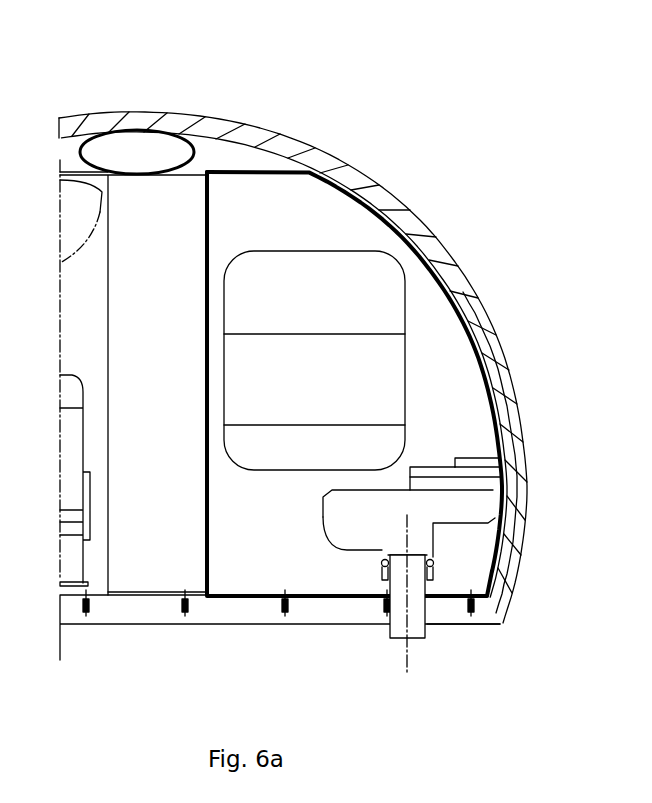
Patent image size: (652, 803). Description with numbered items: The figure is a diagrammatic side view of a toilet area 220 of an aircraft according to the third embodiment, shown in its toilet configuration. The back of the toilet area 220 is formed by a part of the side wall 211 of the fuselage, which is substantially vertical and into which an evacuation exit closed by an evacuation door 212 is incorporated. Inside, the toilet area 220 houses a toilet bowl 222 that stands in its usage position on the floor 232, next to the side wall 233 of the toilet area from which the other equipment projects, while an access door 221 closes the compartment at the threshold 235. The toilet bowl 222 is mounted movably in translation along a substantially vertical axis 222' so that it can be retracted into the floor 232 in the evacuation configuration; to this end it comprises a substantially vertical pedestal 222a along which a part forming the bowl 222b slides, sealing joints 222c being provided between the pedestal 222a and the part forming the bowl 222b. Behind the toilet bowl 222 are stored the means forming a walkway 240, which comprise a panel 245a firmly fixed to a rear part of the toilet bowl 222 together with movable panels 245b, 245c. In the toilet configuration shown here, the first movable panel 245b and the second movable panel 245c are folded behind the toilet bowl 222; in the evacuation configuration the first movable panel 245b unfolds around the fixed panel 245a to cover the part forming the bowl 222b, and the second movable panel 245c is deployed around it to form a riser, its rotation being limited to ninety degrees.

The side wall 211 is at (502, 591).
The evacuation door 212 is at (462, 286).
The toilet area 220 is at (264, 687).
The access door 221 is at (140, 207).
The toilet bowl 222 is at (461, 523).
The pedestal 222a is at (398, 627).
The part forming the bowl 222b is at (357, 523).
The sealing joints 222c is at (385, 583).
The vertical axis 222' is at (440, 627).
The floor 232 is at (299, 593).
The side wall of the toilet area 233 is at (296, 199).
The threshold 235 is at (220, 586).
The means forming a walkway 240 is at (478, 434).
The fixed panel 245a is at (492, 485).
The first movable panel 245b is at (423, 470).
The second movable panel 245c is at (498, 460).